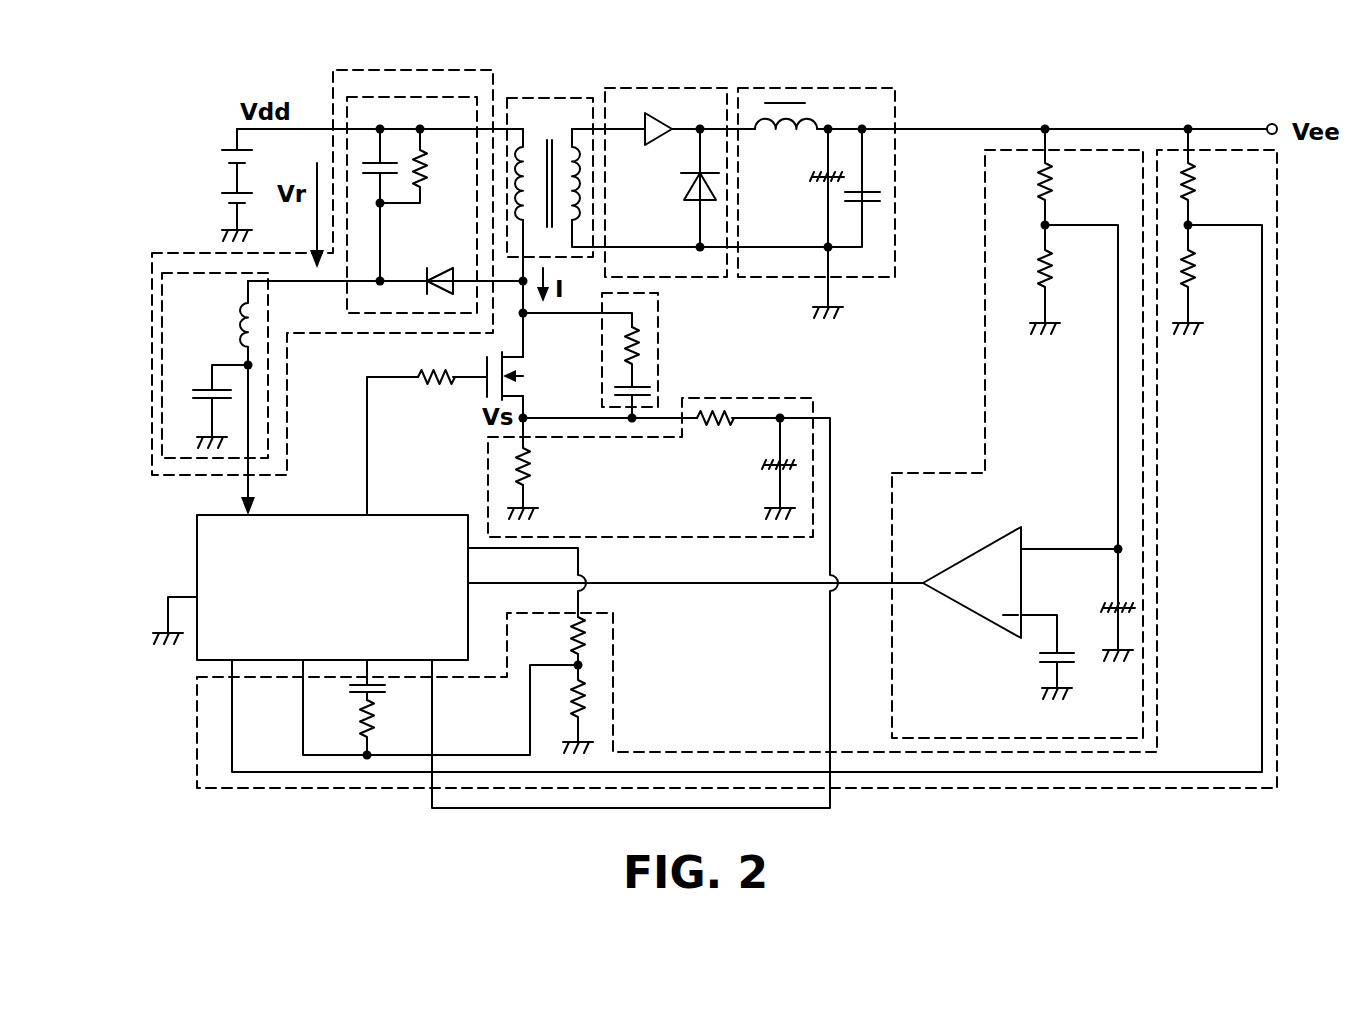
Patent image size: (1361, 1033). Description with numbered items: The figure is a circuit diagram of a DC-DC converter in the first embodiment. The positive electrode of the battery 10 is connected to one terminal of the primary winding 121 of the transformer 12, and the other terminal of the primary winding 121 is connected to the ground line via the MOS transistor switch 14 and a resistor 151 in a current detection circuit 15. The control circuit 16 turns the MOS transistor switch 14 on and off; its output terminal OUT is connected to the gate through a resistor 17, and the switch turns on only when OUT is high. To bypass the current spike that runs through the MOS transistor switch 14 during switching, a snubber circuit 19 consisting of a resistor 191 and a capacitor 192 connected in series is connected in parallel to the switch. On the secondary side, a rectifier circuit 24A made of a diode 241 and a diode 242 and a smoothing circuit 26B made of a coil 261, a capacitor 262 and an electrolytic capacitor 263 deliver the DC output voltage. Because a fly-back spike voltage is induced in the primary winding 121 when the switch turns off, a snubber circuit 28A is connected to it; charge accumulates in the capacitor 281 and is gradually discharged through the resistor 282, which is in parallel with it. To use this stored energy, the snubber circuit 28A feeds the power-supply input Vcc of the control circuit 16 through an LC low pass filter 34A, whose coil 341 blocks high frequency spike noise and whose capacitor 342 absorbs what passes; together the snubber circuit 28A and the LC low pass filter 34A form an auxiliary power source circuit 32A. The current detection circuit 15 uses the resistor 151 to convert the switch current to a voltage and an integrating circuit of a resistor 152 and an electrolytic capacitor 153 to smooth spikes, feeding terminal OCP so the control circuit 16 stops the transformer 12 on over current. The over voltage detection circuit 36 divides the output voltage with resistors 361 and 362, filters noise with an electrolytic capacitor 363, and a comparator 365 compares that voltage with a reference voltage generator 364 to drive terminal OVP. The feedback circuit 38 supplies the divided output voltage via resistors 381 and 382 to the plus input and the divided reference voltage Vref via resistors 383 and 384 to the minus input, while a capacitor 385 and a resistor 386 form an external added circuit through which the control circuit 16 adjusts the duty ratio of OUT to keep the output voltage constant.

The battery 10 is at (235, 145).
The transformer 12 is at (538, 98).
The primary winding 121 is at (572, 128).
The MOS transistor switch 14 is at (509, 361).
The current detection circuit 15 is at (788, 398).
The resistor 151 is at (529, 468).
The resistor 152 is at (712, 428).
The electrolytic capacitor 153 is at (774, 472).
The control circuit 16 is at (196, 556).
The resistor 17 is at (433, 383).
The snubber circuit 19 is at (661, 322).
The resistor 191 is at (648, 344).
The capacitor 192 is at (650, 388).
The rectifier circuit 24A is at (648, 80).
The diode 241 is at (659, 144).
The diode 242 is at (690, 195).
The smoothing circuit 26B is at (819, 88).
The coil 261 is at (781, 141).
The capacitor 262 is at (875, 207).
The electrolytic capacitor 263 is at (820, 194).
The snubber circuit 28A is at (365, 86).
The capacitor 281 is at (443, 272).
The resistor 282 is at (430, 168).
The auxiliary power source circuit 32A is at (326, 78).
The LC low pass filter 34A is at (288, 428).
The coil 341 is at (240, 318).
The capacitor 342 is at (203, 386).
The over voltage detection circuit 36 is at (921, 473).
The resistor 361 is at (1052, 187).
The resistor 362 is at (1052, 263).
The electrolytic capacitor 363 is at (1102, 614).
The reference voltage generator 364 is at (1046, 654).
The comparator 365 is at (968, 558).
The feedback circuit 38 is at (1280, 458).
The resistor 381 is at (1194, 170).
The resistor 382 is at (1189, 263).
The resistor 383 is at (590, 626).
The resistor 384 is at (590, 693).
The capacitor 385 is at (380, 689).
The resistor 386 is at (380, 725).